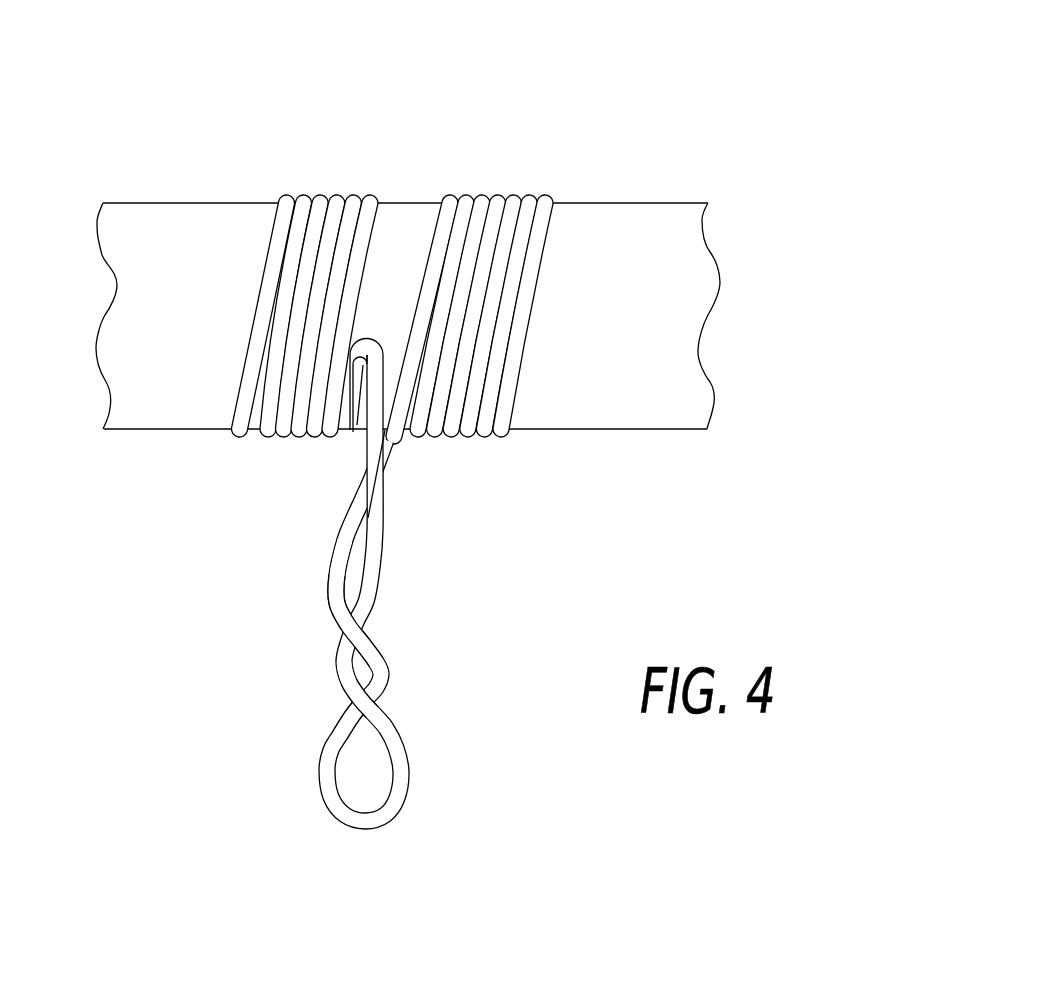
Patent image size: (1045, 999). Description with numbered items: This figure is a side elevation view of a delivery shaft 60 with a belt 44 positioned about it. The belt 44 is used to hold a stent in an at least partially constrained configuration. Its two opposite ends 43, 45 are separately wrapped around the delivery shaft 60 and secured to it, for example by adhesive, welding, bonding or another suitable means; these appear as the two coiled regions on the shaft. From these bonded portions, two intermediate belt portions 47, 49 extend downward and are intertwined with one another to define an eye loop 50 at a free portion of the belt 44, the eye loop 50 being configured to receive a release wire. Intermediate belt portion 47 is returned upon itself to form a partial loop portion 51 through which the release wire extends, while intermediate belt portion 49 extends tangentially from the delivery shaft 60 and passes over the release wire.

The belt 44 is at (478, 265).
The delivery shaft 60 is at (652, 218).
The end of the belt 43 is at (258, 428).
The end of the belt 45 is at (510, 412).
The intermediate belt portion 47 is at (375, 468).
The intermediate belt portion 49 is at (393, 445).
The eye loop 50 is at (362, 753).
The partial loop portion 51 is at (353, 430).